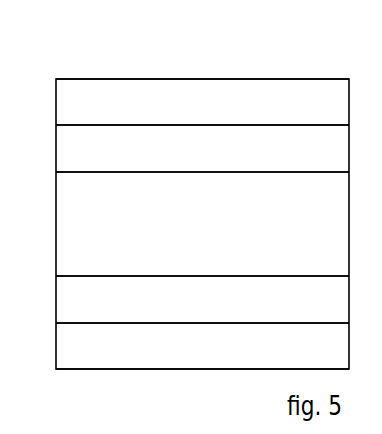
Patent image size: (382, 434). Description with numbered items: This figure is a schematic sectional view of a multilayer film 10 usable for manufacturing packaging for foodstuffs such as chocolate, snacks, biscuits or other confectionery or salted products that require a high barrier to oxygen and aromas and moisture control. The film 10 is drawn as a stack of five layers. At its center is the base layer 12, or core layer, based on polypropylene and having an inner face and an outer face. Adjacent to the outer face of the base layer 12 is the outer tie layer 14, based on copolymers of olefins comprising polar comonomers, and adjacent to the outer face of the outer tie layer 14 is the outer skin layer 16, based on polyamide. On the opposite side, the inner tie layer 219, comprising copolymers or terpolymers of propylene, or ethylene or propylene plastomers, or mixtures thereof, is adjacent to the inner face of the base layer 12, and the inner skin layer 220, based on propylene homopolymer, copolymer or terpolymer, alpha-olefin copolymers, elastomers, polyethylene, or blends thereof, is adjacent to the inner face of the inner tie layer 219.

The multilayer film 10 is at (44, 84).
The outer skin layer 16 is at (215, 112).
The outer tie layer 14 is at (215, 160).
The base layer 12 is at (215, 234).
The inner tie layer 219 is at (222, 310).
The inner skin layer 220 is at (222, 356).